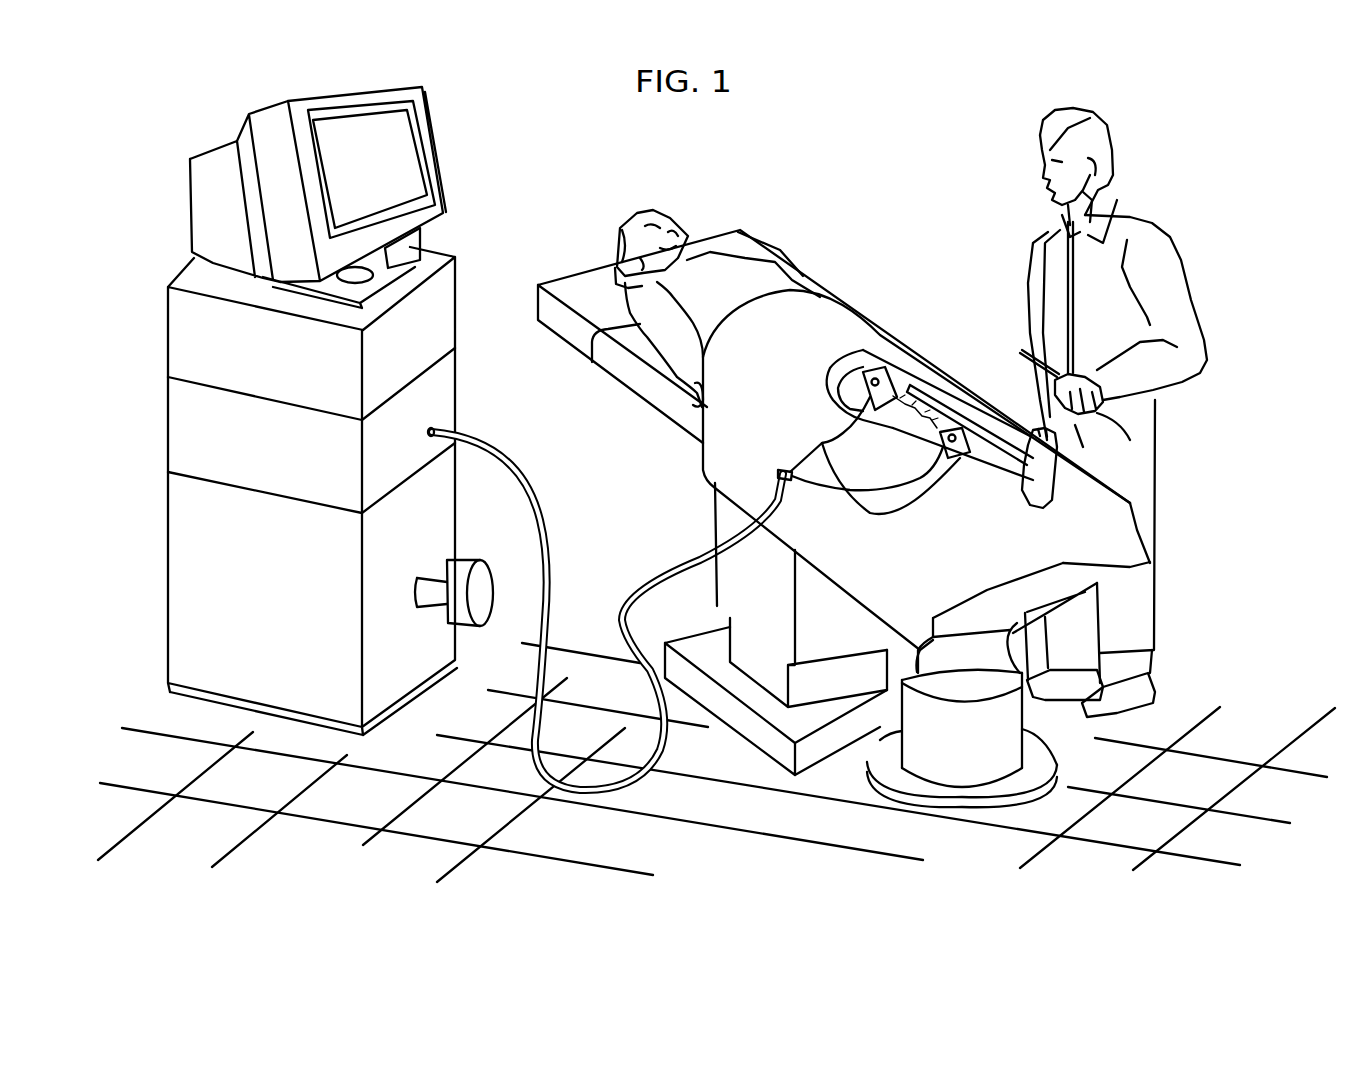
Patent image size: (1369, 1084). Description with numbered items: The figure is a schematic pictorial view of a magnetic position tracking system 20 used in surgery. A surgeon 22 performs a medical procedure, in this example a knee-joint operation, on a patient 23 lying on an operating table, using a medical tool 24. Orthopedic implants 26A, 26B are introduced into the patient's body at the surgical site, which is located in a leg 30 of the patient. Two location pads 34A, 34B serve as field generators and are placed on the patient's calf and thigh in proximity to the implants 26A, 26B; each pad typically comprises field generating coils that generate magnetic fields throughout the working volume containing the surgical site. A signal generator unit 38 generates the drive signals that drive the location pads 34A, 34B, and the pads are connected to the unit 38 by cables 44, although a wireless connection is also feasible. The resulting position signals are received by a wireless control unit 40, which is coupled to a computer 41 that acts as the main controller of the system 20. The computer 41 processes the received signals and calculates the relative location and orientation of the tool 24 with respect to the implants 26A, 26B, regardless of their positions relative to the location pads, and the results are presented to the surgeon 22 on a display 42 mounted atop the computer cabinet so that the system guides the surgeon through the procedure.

The magnetic position tracking system 20 is at (162, 119).
The surgeon 22 is at (1130, 218).
The patient 23 is at (713, 268).
The medical tool 24 is at (1153, 467).
The orthopedic implant 26A is at (870, 398).
The orthopedic implant 26B is at (943, 450).
The leg 30 is at (910, 388).
The location pad 34A is at (862, 368).
The location pad 34B is at (947, 452).
The signal generator unit 38 is at (447, 392).
The wireless control unit 40 is at (487, 562).
The computer 41 is at (447, 318).
The display 42 is at (423, 127).
The cables 44 is at (643, 784).